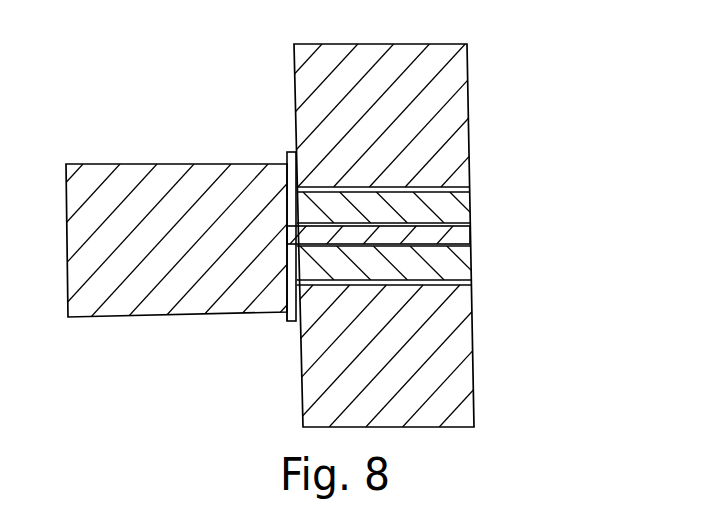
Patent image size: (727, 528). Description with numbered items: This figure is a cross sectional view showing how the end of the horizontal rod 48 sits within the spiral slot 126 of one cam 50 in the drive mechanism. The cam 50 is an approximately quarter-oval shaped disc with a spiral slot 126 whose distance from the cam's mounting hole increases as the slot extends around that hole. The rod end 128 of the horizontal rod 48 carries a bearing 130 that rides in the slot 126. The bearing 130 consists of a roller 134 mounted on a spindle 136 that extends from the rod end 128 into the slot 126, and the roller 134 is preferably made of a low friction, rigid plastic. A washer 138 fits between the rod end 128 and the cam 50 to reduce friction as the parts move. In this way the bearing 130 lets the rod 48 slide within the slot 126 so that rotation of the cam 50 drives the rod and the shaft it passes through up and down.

The horizontal rod 48 is at (135, 164).
The cam 50 is at (482, 87).
The spiral slot 126 is at (467, 187).
The rod end 128 is at (284, 302).
The bearing 130 is at (505, 316).
The roller 134 is at (472, 257).
The spindle 136 is at (470, 237).
The washer 138 is at (293, 328).